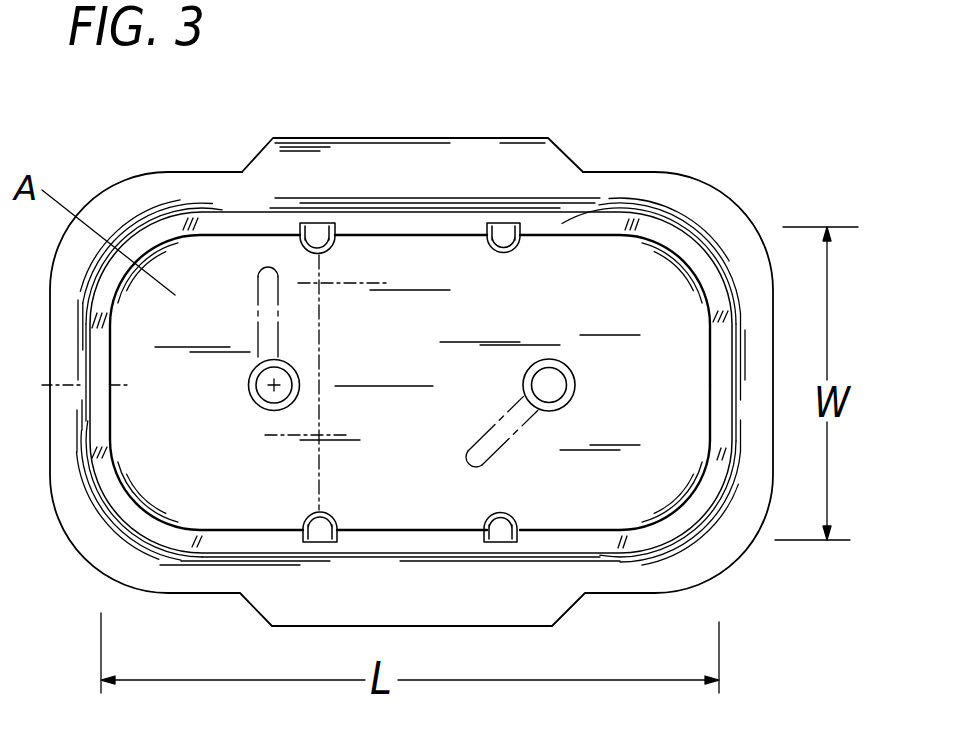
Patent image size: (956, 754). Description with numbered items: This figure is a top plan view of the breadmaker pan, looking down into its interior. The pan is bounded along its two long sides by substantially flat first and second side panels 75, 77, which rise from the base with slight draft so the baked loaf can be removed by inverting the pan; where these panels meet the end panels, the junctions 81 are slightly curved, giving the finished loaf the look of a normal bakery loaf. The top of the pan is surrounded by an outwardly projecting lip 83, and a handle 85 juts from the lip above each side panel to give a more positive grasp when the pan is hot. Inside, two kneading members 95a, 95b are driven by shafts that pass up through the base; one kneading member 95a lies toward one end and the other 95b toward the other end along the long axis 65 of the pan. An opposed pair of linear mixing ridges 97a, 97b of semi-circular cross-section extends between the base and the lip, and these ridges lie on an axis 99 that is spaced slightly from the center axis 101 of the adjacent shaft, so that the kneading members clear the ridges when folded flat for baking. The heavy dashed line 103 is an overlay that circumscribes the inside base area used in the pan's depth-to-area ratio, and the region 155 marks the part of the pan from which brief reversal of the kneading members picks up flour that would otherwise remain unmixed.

The long axis 65 is at (373, 386).
The first side panel 75 is at (572, 236).
The second side panel 77 is at (567, 538).
The junctions of the panels with one another 81 is at (140, 248).
The lip 83 is at (693, 198).
The handle 85 is at (436, 138).
The kneading member 95a is at (250, 382).
The kneading member 95b is at (575, 388).
The mixing ridge 97a is at (317, 232).
The mixing ridge 97b is at (312, 542).
The axis 99 is at (323, 490).
The center axis 101 is at (274, 385).
The heavy dashed line 103 is at (130, 497).
The region 155 is at (428, 515).